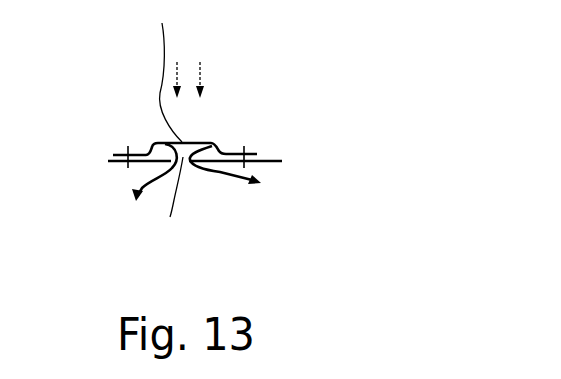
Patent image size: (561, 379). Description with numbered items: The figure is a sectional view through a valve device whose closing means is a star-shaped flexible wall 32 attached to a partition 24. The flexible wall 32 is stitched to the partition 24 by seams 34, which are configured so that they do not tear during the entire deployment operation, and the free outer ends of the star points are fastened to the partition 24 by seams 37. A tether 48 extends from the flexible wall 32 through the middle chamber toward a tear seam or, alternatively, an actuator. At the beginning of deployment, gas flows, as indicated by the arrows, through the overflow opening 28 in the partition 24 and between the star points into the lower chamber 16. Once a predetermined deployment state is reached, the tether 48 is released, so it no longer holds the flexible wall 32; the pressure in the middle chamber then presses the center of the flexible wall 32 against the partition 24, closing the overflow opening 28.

The lower chamber 16 is at (231, 262).
The partition 24 is at (270, 162).
The overflow opening 28 is at (196, 196).
The flexible wall 32 is at (213, 142).
The seams 34 is at (117, 164).
The seams 37 is at (127, 152).
The tether 48 is at (167, 55).